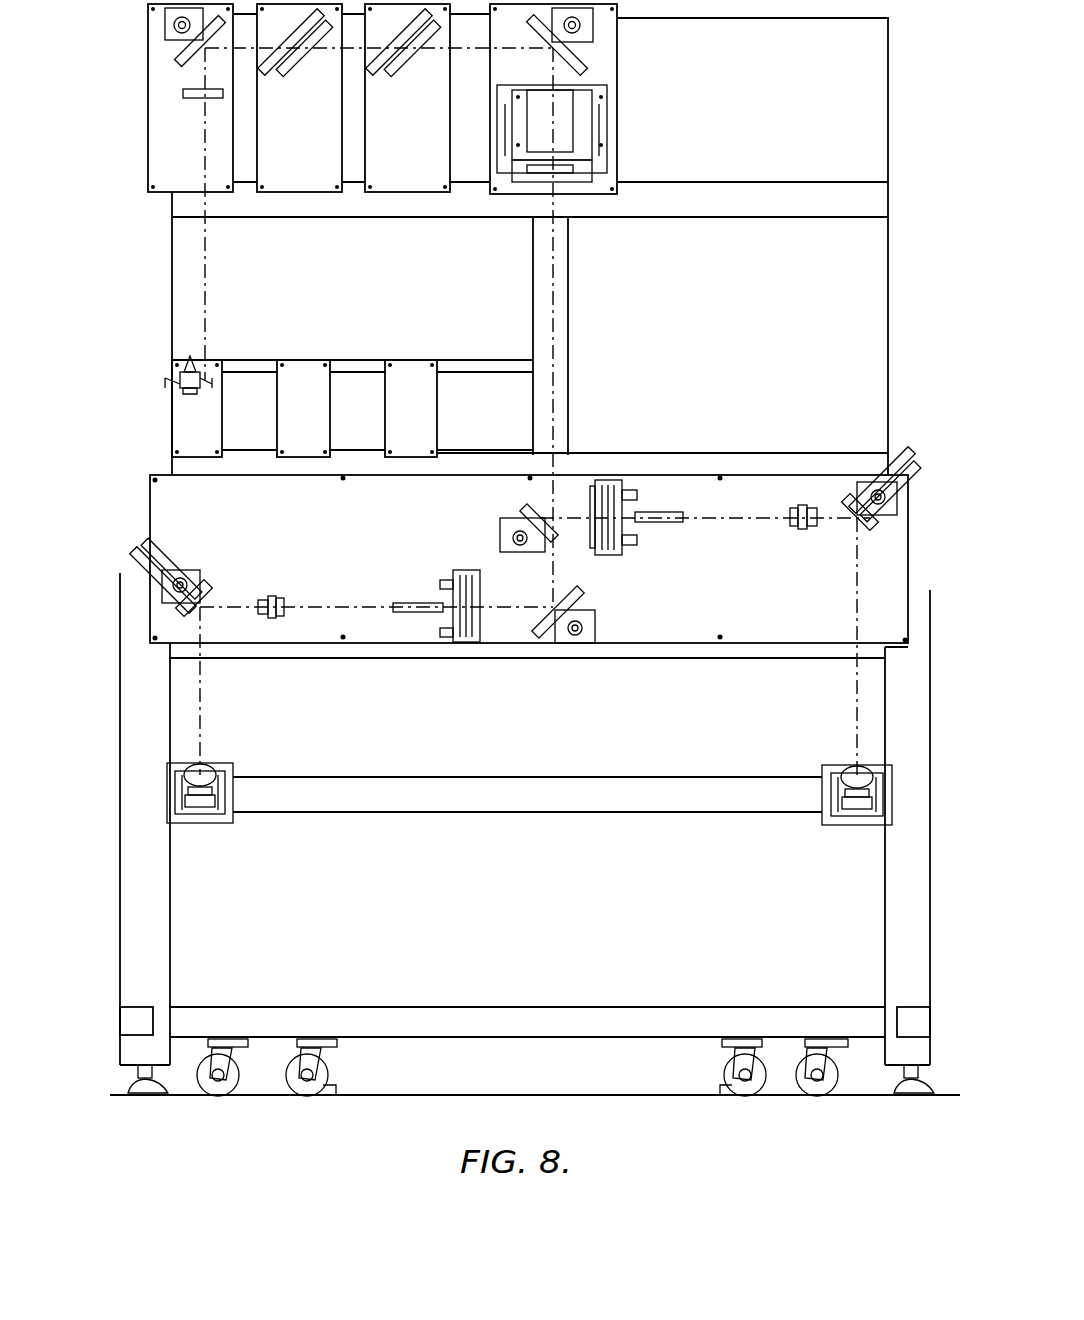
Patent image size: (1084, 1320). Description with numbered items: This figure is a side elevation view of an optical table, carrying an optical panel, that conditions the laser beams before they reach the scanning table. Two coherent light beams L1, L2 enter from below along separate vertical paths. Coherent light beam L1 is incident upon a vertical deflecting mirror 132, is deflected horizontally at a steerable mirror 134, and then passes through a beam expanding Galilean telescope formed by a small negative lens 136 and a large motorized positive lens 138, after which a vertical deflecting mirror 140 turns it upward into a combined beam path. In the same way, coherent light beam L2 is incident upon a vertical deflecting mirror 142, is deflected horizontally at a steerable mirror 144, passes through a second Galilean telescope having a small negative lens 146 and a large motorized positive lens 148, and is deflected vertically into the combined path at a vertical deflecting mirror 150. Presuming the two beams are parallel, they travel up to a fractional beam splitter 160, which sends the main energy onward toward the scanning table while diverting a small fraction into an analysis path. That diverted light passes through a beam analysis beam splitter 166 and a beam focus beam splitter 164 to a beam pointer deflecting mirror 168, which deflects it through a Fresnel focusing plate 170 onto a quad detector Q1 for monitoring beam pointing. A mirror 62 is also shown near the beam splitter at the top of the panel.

The mirror 62 is at (590, 55).
The fractional beam splitter 160 is at (590, 120).
The beam focus beam splitter 164 is at (400, 80).
The beam analysis beam splitter 166 is at (298, 82).
The beam pointer deflecting mirror 168 is at (192, 62).
The Fresnel focusing plate 170 is at (188, 100).
The quad detector Q1 is at (170, 392).
The vertical deflecting mirror 132 is at (200, 770).
The steerable mirror 134 is at (200, 580).
The small negative lens 136 is at (277, 597).
The large motorized positive lens 138 is at (465, 570).
The vertical deflecting mirror 140 is at (583, 597).
The vertical deflecting mirror 142 is at (850, 765).
The steerable mirror 144 is at (870, 520).
The small negative lens 146 is at (805, 530).
The large motorized positive lens 148 is at (630, 480).
The vertical deflecting mirror 150 is at (528, 512).
The coherent light beam L1 is at (200, 702).
The coherent light beam L2 is at (857, 690).